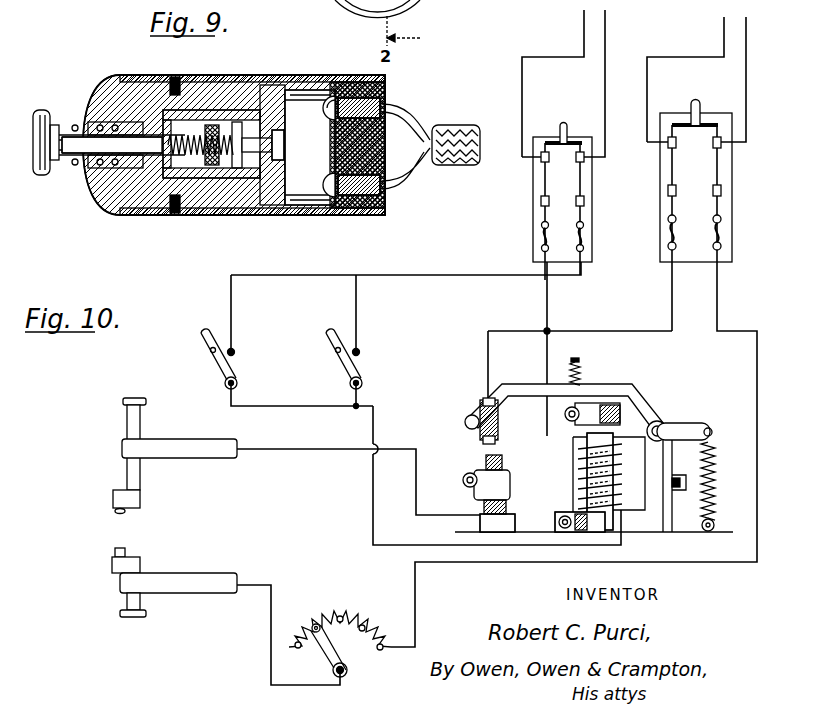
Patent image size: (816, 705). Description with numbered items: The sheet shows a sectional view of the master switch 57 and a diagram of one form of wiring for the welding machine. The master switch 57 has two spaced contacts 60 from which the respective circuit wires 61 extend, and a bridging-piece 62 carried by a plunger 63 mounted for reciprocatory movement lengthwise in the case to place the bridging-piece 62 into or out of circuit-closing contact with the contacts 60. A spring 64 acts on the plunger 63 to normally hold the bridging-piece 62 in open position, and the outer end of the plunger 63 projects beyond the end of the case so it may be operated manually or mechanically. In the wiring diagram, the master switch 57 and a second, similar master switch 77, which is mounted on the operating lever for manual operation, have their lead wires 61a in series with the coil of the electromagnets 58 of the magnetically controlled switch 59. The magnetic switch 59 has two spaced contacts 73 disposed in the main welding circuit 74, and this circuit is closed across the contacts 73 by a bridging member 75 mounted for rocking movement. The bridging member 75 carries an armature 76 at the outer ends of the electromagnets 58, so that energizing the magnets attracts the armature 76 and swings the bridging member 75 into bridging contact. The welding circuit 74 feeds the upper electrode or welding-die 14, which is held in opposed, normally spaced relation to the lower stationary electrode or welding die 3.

In FIG. 9, the master switch 57 is at (234, 148).
In FIG. 10, the master switch 57 is at (355, 368).
In FIG. 9, the spaced contacts 60 is at (330, 104).
In FIG. 9, the circuit wires 61 is at (426, 134).
In FIG. 10, the circuit wires 61 is at (441, 283).
In FIG. 10, the lead wires 61a is at (302, 278).
In FIG. 9, the bridging-piece 62 is at (288, 150).
In FIG. 9, the plunger 63 is at (90, 160).
In FIG. 9, the spring 64 is at (75, 124).
In FIG. 10, the master switch 77 is at (228, 367).
In FIG. 10, the main welding circuit 74 is at (414, 468).
In FIG. 10, the bridging member 75 is at (525, 390).
In FIG. 10, the magnetically controlled switch 59 is at (628, 383).
In FIG. 10, the armature 76 is at (604, 418).
In FIG. 10, the spaced contacts 73 is at (506, 470).
In FIG. 10, the electromagnets 58 is at (586, 481).
In FIG. 10, the upper electrode or welding-die 14 is at (116, 512).
In FIG. 10, the lower or stationary electrode or welding die 3 is at (113, 554).